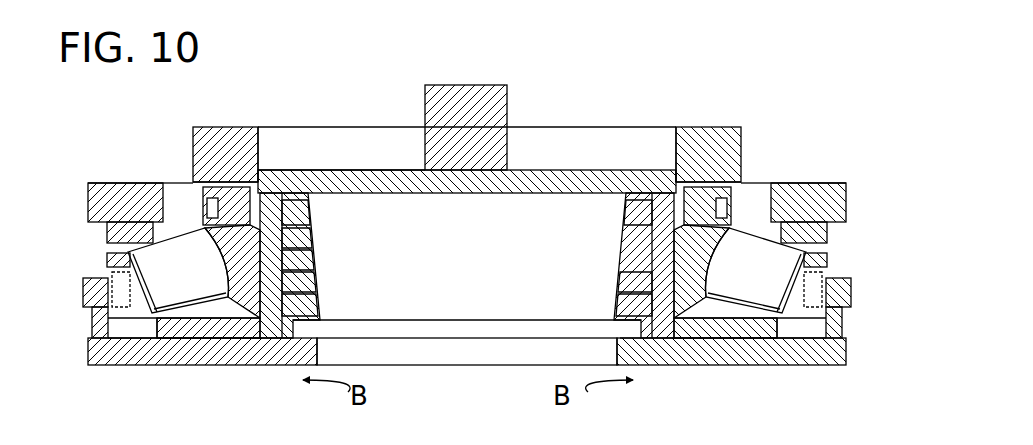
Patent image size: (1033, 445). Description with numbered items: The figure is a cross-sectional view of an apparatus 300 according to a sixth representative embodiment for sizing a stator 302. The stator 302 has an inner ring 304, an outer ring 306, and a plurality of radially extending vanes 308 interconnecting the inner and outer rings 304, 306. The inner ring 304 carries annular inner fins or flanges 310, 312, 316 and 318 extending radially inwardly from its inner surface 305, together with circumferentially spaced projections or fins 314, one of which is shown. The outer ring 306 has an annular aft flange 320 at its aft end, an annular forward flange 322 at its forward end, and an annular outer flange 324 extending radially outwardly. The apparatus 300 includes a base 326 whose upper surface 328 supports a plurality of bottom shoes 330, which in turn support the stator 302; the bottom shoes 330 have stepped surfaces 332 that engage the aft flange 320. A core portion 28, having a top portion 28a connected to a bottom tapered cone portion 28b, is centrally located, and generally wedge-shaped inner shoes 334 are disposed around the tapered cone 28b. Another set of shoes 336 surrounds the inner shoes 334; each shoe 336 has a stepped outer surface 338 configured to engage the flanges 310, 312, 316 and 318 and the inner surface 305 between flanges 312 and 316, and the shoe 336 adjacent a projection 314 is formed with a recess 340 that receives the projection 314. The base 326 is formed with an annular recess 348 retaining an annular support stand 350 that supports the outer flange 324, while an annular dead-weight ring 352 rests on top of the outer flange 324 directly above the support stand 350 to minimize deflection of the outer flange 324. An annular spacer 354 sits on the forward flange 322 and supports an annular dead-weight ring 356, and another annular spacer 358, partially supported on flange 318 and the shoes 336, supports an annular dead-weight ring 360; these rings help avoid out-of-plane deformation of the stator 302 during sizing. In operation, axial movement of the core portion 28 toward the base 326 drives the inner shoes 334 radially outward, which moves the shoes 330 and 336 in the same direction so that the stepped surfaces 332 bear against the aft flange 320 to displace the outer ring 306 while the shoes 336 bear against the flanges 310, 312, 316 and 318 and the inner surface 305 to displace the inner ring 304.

The core portion 28 is at (512, 113).
The top portion 28a is at (513, 132).
The bottom tapered cone portion 28b is at (410, 168).
The apparatus 300 is at (762, 100).
The stator 302 is at (193, 330).
The inner ring 304 is at (290, 215).
The inner surface 305 is at (203, 232).
The outer ring 306 is at (131, 330).
The vanes 308 is at (177, 255).
The annular inner fin or flange 310 is at (285, 300).
The annular inner fin or flange 312 is at (285, 280).
The projection or fin 314 is at (290, 240).
The annular inner fin or flange 316 is at (298, 187).
The annular inner fin or flange 318 is at (242, 182).
The annular aft flange 320 is at (157, 332).
The annular forward flange 322 is at (120, 245).
The annular outer flange 324 is at (113, 350).
The base 326 is at (645, 357).
The upper surface 328 is at (310, 335).
The bottom shoes 330 is at (250, 330).
The stepped surfaces 332 is at (157, 320).
The inner shoes 334 is at (292, 330).
The shoes 336 is at (230, 195).
The stepped outer surface 338 is at (223, 330).
The recess 340 is at (290, 260).
The annular recess 348 is at (95, 325).
The annular support stand 350 is at (100, 320).
The annular dead-weight ring 352 is at (113, 278).
The annular spacer 354 is at (130, 232).
The annular dead-weight ring 356 is at (108, 190).
The annular spacer 358 is at (205, 190).
The annular dead-weight ring 360 is at (215, 165).